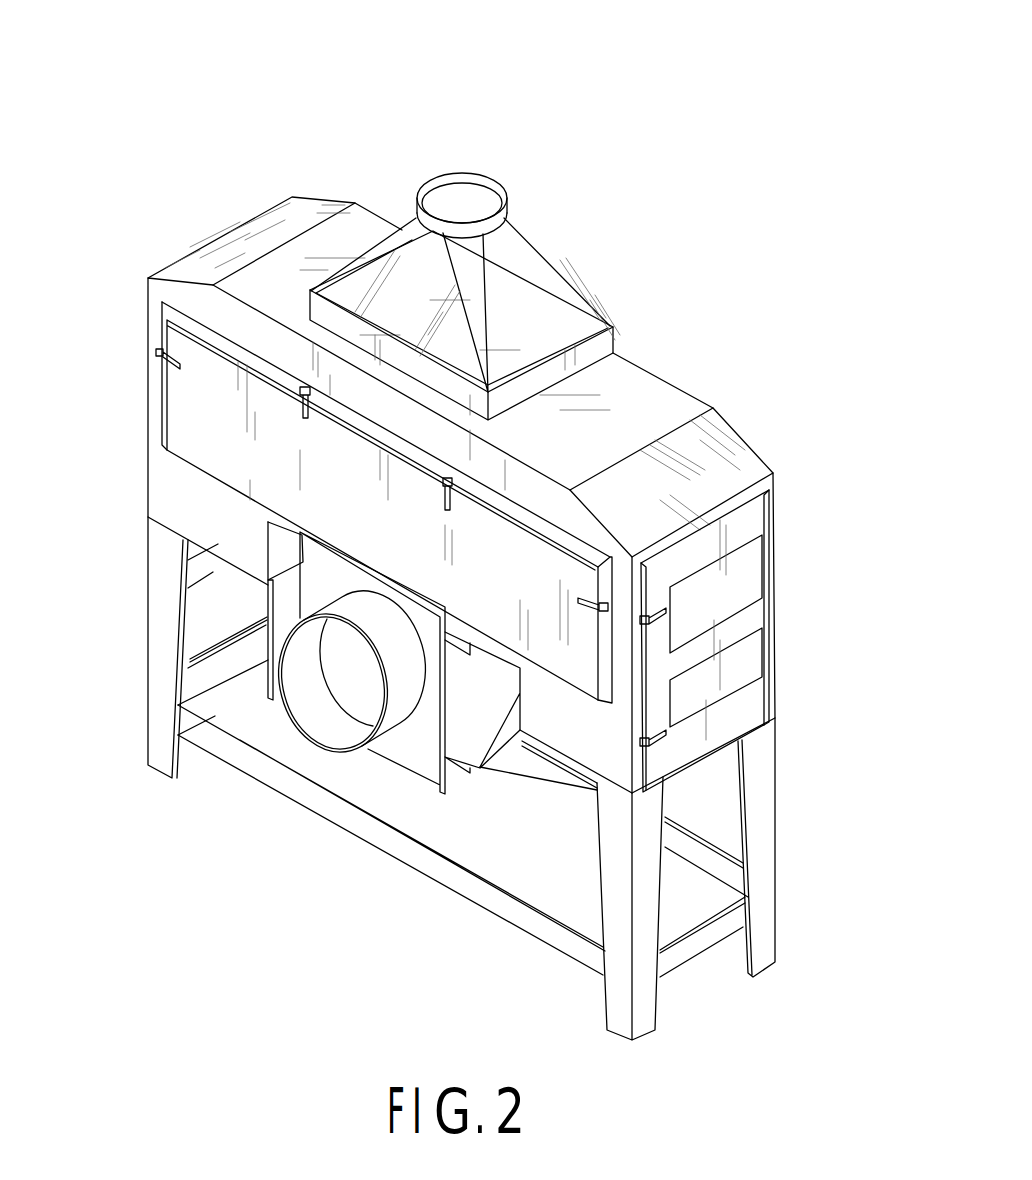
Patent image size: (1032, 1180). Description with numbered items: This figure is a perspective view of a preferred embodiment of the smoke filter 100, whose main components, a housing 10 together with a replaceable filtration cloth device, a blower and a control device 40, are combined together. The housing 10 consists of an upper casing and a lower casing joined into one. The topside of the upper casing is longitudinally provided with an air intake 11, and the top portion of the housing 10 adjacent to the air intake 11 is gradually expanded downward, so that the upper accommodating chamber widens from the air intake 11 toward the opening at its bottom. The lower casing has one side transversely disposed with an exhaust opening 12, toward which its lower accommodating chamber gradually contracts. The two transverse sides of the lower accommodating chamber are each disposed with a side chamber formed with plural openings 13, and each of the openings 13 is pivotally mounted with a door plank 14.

The smoke filter 100 is at (655, 153).
The housing 10 is at (665, 378).
The air intake 11 is at (477, 200).
The exhaust opening 12 is at (345, 722).
The openings 13 is at (742, 500).
The door plank 14 is at (760, 617).
The control device 40 is at (188, 626).